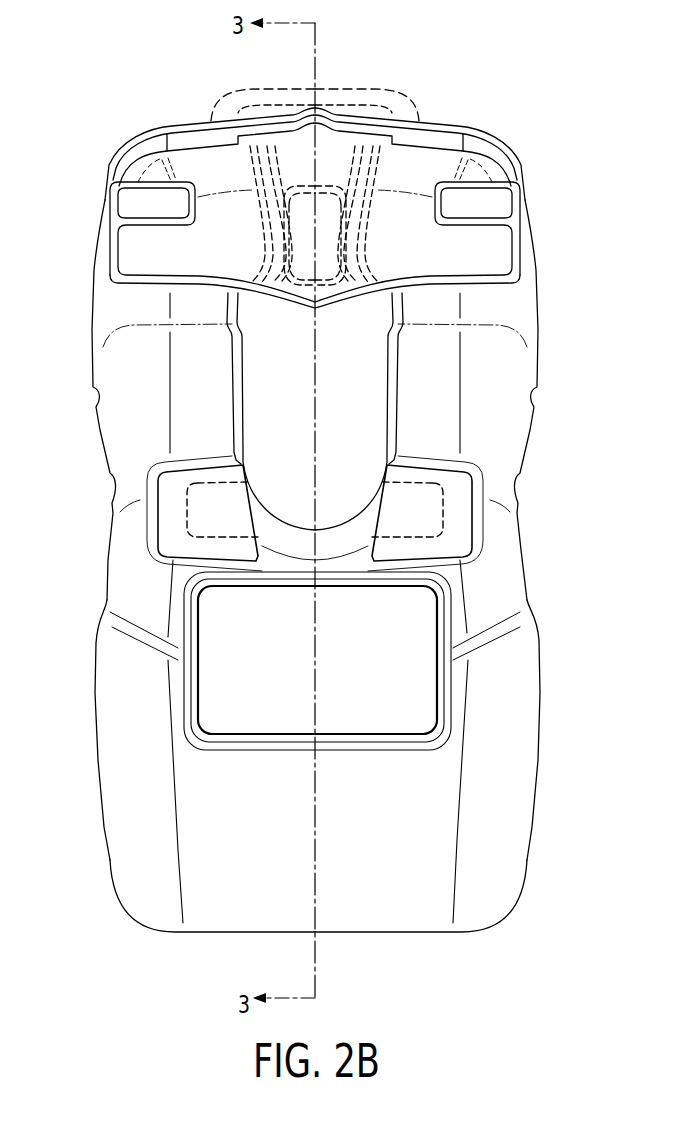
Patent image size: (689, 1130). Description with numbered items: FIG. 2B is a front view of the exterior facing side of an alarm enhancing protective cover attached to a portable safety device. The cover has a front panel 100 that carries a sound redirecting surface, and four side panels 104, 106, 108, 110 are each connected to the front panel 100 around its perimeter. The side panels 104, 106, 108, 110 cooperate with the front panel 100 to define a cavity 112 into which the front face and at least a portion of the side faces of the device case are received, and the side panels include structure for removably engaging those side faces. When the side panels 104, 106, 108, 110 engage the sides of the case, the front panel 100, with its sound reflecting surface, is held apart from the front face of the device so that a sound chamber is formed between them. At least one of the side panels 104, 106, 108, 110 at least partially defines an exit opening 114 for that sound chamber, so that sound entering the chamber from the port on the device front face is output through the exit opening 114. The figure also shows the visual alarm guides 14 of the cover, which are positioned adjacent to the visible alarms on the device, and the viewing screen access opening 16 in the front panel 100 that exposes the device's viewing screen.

The visual alarm guides 14 is at (140, 204).
The viewing screen access opening 16 is at (388, 727).
The front panel 100 is at (364, 860).
The side panel 104 is at (434, 127).
The side panel 106 is at (531, 447).
The side panel 108 is at (224, 932).
The side panel 110 is at (95, 648).
The cavity 112 is at (432, 266).
The exit opening 114 is at (159, 266).